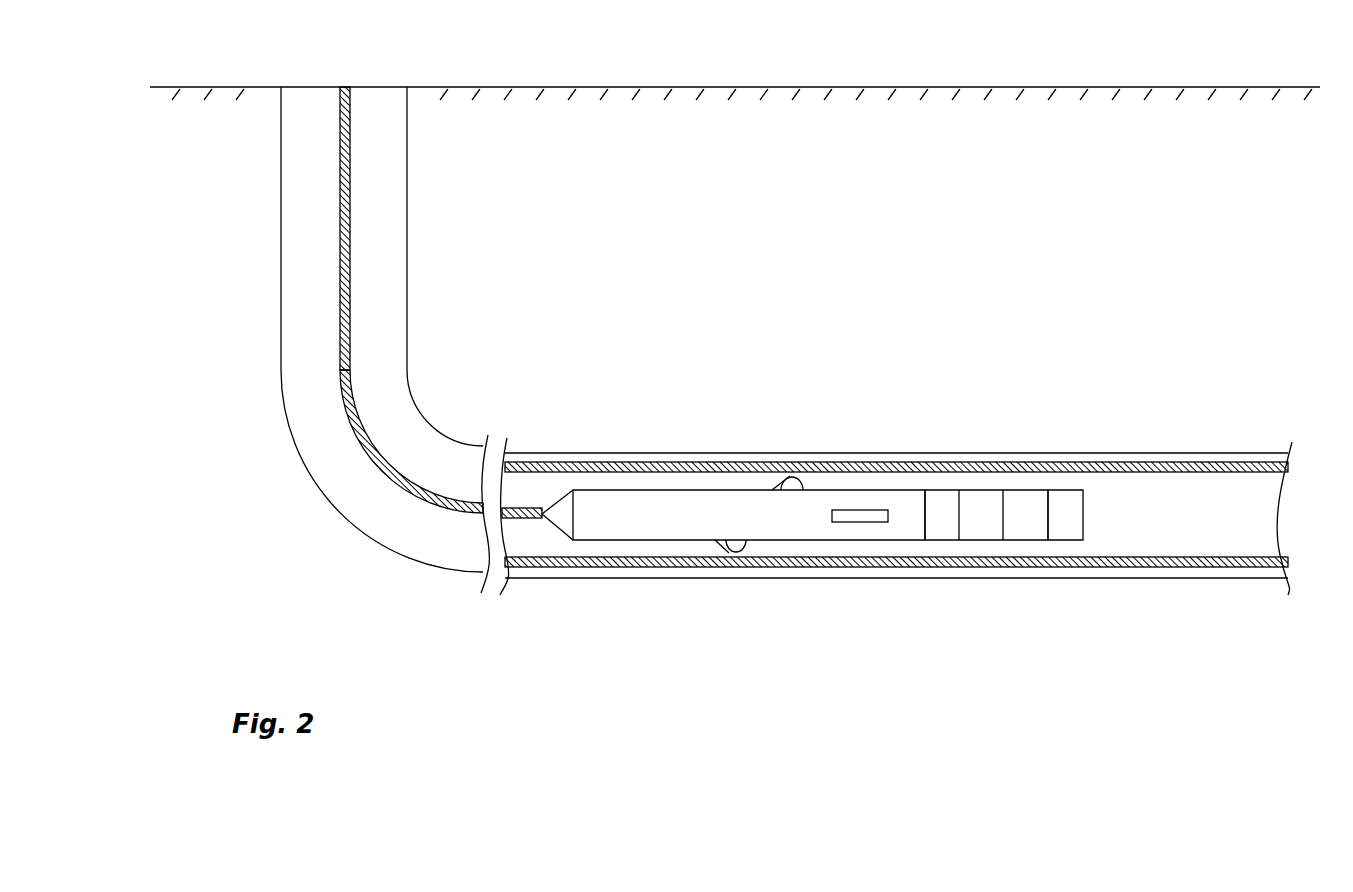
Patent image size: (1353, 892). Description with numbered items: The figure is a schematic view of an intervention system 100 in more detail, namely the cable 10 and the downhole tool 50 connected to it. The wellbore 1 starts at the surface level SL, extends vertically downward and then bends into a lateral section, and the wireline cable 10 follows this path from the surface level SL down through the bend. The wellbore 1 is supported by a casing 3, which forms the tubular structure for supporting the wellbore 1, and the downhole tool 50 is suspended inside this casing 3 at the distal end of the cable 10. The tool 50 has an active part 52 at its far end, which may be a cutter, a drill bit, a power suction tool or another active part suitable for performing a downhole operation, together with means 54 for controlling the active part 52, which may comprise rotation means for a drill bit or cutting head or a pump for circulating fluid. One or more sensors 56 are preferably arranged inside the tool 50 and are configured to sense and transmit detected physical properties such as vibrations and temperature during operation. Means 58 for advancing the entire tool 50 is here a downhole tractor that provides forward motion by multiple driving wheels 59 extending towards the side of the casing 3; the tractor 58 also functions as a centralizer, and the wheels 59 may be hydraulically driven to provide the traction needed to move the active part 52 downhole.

The surface level SL is at (750, 87).
The wellbore 1 is at (1033, 572).
The casing 3 is at (626, 563).
The cable 10 is at (340, 346).
The intervention system 100 is at (540, 347).
The downhole tool 50 is at (882, 509).
The active part 52 is at (1077, 517).
The means for controlling the active part 54 is at (983, 503).
The sensors 56 is at (862, 520).
The means for advancing the tool 58 is at (722, 500).
The driving wheels 59 is at (793, 480).